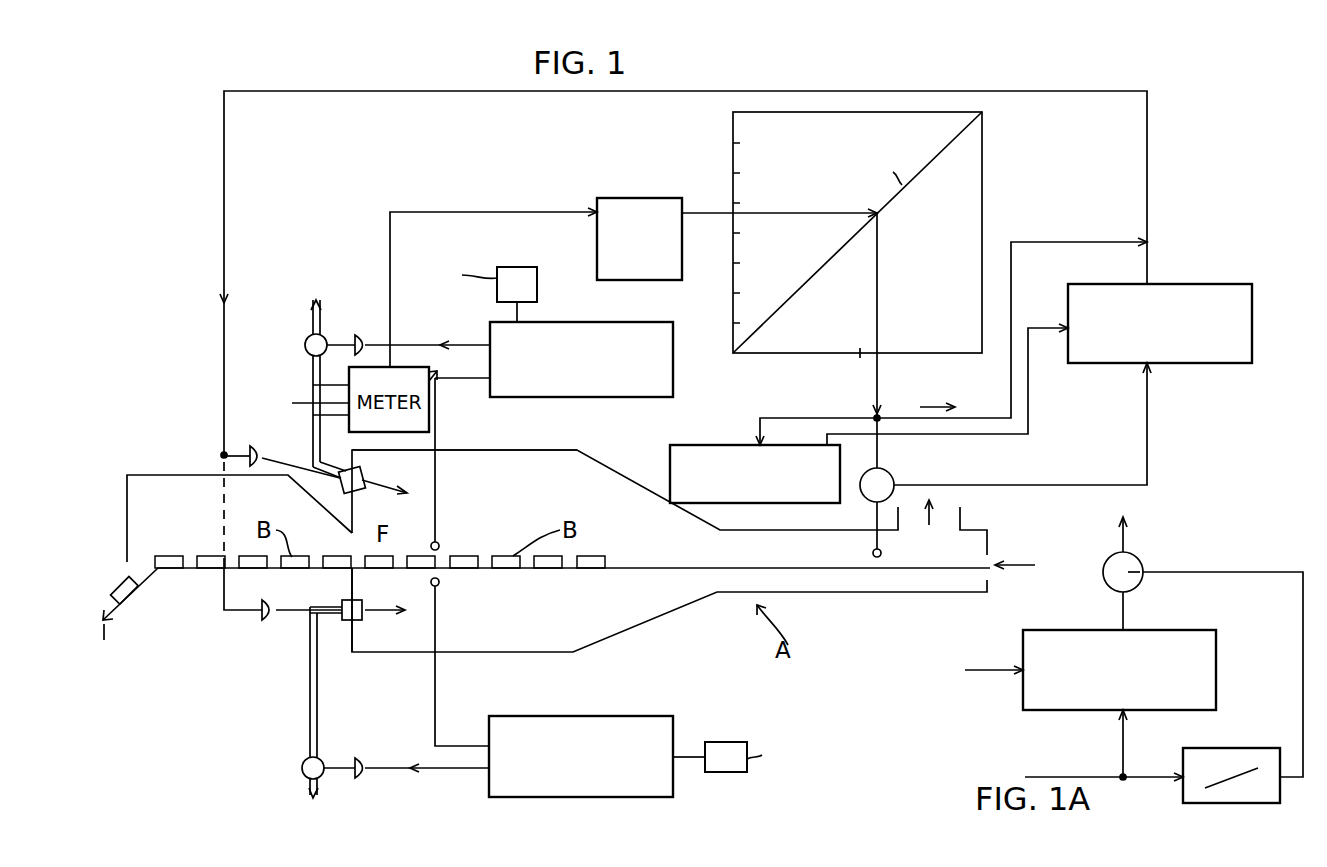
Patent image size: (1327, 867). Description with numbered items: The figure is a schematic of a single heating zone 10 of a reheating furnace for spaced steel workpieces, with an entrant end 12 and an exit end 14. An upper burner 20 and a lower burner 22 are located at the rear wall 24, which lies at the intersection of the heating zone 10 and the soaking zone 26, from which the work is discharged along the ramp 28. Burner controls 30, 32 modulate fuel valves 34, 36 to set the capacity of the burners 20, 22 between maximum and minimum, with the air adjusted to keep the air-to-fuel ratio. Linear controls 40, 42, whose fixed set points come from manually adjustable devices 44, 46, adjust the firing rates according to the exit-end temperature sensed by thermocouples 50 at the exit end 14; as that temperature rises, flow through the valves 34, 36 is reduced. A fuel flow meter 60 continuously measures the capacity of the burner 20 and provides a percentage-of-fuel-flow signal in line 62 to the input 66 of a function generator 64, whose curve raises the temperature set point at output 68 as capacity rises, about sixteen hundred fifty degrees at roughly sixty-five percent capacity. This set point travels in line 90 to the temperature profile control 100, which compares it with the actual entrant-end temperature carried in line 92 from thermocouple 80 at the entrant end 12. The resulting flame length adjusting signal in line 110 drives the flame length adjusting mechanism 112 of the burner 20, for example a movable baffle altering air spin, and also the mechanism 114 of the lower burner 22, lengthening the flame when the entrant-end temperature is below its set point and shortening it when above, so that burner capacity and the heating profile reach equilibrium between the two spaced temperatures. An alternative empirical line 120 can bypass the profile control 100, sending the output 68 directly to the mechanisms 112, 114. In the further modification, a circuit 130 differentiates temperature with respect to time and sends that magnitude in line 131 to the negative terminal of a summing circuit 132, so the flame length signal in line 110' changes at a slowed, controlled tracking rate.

In FIG. 1, the heating zone 10 is at (550, 470).
In FIG. 1, the entrant end 12 is at (817, 583).
In FIG. 1, the exit end 14 is at (452, 473).
In FIG. 1, the upper burner 20 is at (365, 475).
In FIG. 1, the lower burner 22 is at (358, 618).
In FIG. 1, the rear wall 24 is at (350, 583).
In FIG. 1, the soaking zone 26 is at (172, 485).
In FIG. 1, the ramp 28 is at (128, 600).
In FIG. 1, the burner control 30 is at (362, 333).
In FIG. 1, the burner control 32 is at (362, 756).
In FIG. 1, the fuel valve 34 is at (305, 345).
In FIG. 1, the fuel valve 36 is at (302, 768).
In FIG. 1, the linear control 40 is at (585, 322).
In FIG. 1, the linear control 42 is at (627, 718).
In FIG. 1, the manually adjustable set point device 44 is at (510, 267).
In FIG. 1, the manually adjustable set point device 46 is at (735, 742).
In FIG. 1, the thermocouple 50 is at (438, 540).
In FIG. 1, the fuel flow meter 60 is at (437, 371).
In FIG. 1, the signal line 62 is at (500, 212).
In FIG. 1, the function generator 64 is at (982, 160).
In FIG. 1, the function generator input 66 is at (630, 198).
In FIG. 1, the function generator output 68 is at (815, 498).
In FIG. 1, the thermocouple 80 is at (873, 553).
In FIG. 1, the set point line 90 is at (1028, 418).
In FIG. 1A, the set point line 90 is at (990, 668).
In FIG. 1, the actual temperature line 92 is at (1147, 430).
In FIG. 1A, the actual temperature line 92 is at (1120, 744).
In FIG. 1, the temperature profile control 100 is at (1225, 284).
In FIG. 1A, the temperature profile control 100 is at (1119, 670).
In FIG. 1, the flame length adjusting signal line 110 is at (726, 350).
In FIG. 1A, the flame length adjusting signal line 110 is at (1087, 611).
In FIG. 1A, the modified flame length adjusting signal line 110' is at (1173, 521).
In FIG. 1, the flame length adjusting mechanism 112 is at (262, 448).
In FIG. 1, the flame length adjusting mechanism 114 is at (266, 622).
In FIG. 1, the empirical line 120 is at (1040, 242).
In FIG. 1A, the differentiating circuit 130 is at (1225, 805).
In FIG. 1A, the derivative signal line 131 is at (1303, 618).
In FIG. 1A, the summing circuit 132 is at (1141, 562).